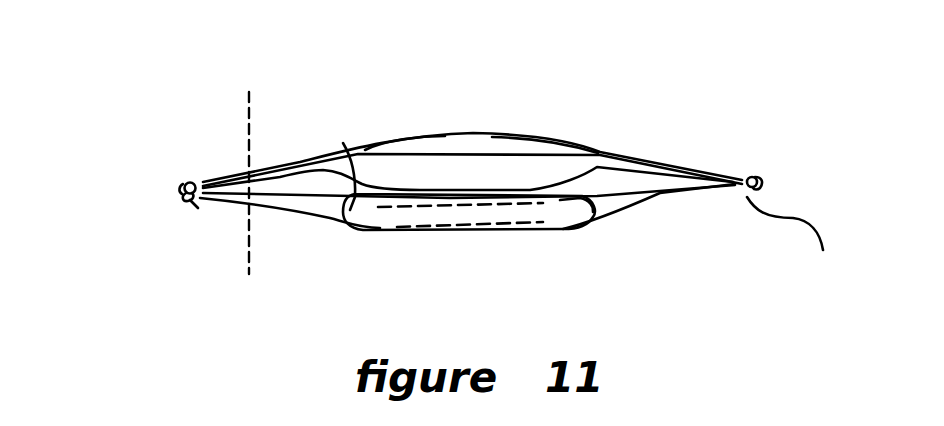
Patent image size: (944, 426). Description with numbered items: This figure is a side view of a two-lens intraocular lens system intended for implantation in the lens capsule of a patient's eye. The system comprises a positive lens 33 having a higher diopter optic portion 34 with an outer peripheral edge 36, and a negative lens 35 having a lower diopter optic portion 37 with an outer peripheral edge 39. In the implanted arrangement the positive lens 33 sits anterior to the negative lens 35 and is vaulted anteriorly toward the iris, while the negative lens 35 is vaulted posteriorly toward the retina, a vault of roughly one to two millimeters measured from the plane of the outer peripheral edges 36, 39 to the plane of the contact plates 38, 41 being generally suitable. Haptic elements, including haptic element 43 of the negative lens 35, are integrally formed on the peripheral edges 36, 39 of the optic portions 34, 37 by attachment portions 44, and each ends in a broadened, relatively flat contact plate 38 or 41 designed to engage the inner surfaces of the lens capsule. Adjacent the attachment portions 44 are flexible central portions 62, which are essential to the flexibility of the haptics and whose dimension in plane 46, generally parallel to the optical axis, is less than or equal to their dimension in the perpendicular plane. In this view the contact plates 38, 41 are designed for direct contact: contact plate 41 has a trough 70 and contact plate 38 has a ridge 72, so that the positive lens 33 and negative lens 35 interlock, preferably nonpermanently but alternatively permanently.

The positive lens 33 is at (467, 133).
The higher diopter optic portion 34 is at (530, 133).
The negative lens 35 is at (540, 222).
The outer peripheral edge 36 is at (592, 144).
The lower diopter optic portion 37 is at (472, 227).
The contact plate 38 is at (197, 180).
The outer peripheral edge 39 is at (600, 225).
The contact plate 41 is at (193, 207).
The haptic element 43 is at (745, 192).
The attachment portion 44 is at (343, 140).
The plane 46 is at (247, 188).
The flexible central portion 62 is at (686, 200).
The trough 70 is at (181, 195).
The ridge 72 is at (187, 203).